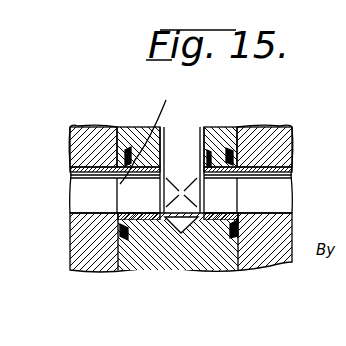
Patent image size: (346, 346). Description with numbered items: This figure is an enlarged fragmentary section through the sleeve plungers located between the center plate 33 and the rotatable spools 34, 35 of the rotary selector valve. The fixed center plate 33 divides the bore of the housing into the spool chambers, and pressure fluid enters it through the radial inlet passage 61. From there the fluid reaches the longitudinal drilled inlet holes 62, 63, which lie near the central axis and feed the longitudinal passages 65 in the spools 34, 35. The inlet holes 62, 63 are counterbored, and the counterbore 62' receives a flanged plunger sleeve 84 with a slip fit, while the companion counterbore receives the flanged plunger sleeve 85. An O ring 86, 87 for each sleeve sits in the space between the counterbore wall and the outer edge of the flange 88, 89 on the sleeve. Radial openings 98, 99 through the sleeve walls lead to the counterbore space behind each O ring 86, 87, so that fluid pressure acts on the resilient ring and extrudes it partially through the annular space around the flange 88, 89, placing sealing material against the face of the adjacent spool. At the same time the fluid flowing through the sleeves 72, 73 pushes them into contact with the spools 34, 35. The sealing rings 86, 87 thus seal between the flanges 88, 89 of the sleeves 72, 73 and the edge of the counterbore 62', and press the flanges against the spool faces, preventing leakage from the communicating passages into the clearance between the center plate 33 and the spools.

The center plate 33 is at (175, 271).
The rotatable spool 34 is at (70, 133).
The rotatable spool 35 is at (286, 135).
The radial inlet passage 61 is at (180, 135).
The drilled inlet hole 62 is at (133, 259).
The counterbore 62' is at (101, 195).
The drilled inlet hole 63 is at (214, 210).
The longitudinal passage 65 is at (76, 213).
The sleeve 72 is at (128, 196).
The sleeve 73 is at (232, 180).
The flanged plunger sleeve 84 is at (148, 133).
The flanged plunger sleeve 85 is at (206, 168).
The O ring 86 is at (131, 160).
The O ring 87 is at (229, 148).
The flange 88 is at (117, 167).
The flange 89 is at (228, 172).
The radial opening 98 is at (133, 207).
The radial opening 99 is at (226, 207).